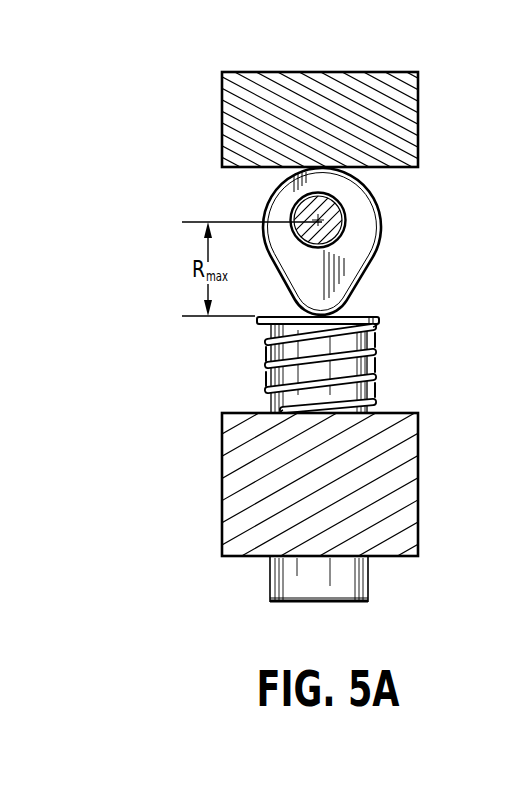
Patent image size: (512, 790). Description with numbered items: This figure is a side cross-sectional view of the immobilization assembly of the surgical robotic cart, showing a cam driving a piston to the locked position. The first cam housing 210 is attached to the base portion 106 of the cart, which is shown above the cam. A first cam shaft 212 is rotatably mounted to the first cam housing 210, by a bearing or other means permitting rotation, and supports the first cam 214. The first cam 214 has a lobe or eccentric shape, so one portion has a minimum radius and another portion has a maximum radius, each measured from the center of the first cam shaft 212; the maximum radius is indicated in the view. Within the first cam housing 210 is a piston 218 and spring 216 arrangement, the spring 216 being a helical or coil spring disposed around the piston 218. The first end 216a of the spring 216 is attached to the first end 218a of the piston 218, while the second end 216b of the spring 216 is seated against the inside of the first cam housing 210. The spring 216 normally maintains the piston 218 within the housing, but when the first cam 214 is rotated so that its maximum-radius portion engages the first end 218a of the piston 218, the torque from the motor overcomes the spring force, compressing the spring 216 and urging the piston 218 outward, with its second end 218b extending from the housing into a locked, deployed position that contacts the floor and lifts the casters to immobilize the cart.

The base portion 106 is at (418, 84).
The first cam housing 210 is at (415, 460).
The first cam shaft 212 is at (332, 208).
The first cam 214 is at (270, 192).
The spring 216 is at (374, 372).
The first end of spring 216a is at (378, 328).
The second end of spring 216b is at (376, 410).
The piston 218 is at (368, 580).
The first end of piston 218a is at (257, 318).
The second end of piston 218b is at (272, 601).